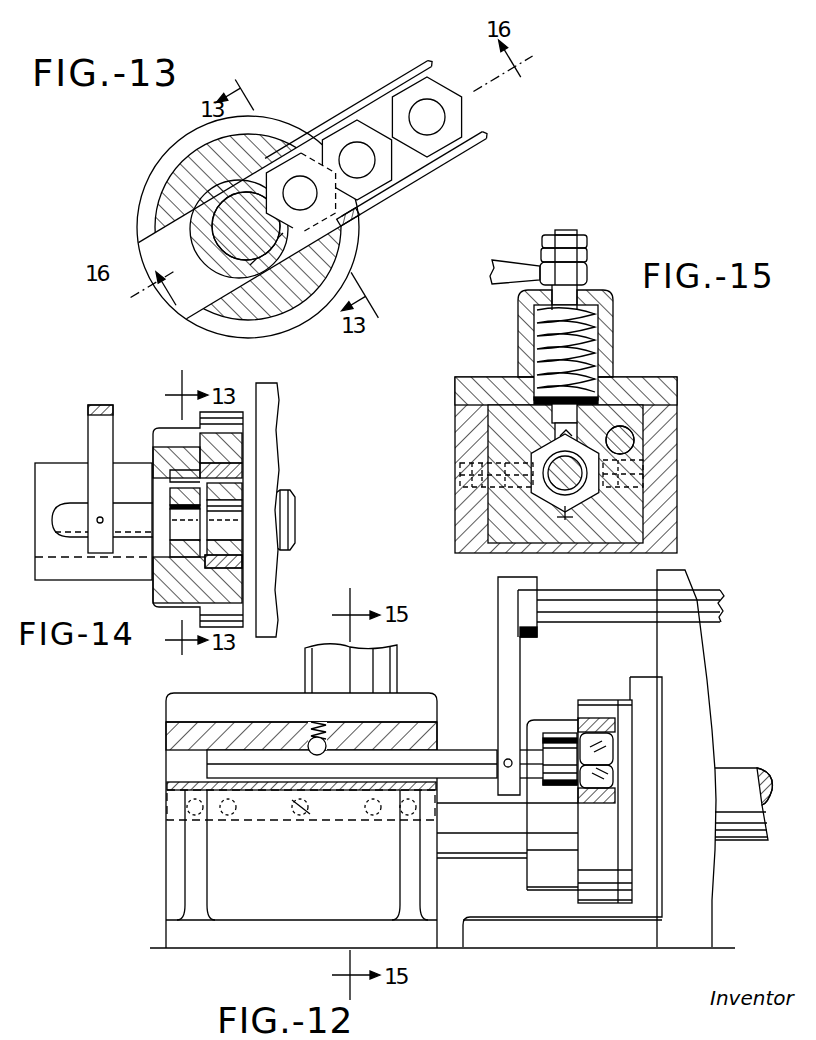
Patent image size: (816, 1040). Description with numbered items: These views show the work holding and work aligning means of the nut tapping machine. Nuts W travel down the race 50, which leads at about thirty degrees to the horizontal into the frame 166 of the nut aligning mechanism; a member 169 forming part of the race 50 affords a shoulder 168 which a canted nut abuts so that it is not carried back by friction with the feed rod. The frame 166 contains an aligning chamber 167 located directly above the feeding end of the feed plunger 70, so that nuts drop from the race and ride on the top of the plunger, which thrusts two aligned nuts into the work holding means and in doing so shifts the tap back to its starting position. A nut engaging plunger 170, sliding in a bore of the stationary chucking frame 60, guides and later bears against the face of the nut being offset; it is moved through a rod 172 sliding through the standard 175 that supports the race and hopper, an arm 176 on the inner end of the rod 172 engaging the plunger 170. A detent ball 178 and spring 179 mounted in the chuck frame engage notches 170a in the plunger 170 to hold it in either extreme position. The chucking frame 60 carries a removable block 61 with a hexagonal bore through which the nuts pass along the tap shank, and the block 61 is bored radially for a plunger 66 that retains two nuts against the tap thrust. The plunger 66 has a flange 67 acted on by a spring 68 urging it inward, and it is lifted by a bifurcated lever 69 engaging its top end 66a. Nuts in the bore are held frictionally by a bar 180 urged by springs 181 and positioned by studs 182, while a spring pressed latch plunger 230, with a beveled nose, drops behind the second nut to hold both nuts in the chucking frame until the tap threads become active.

In FIG. 13, the race 50 is at (362, 102).
In FIG. 13, the work W is at (440, 113).
In FIG. 13, the feed plunger 70 is at (213, 234).
In FIG. 14, the feed plunger 70 is at (284, 498).
In FIG. 12, the feed plunger 70 is at (742, 778).
In FIG. 13, the frame 166 is at (292, 315).
In FIG. 12, the frame 166 is at (545, 875).
In FIG. 13, the shoulder 168 is at (332, 229).
In FIG. 14, the shoulder 168 is at (205, 560).
In FIG. 13, the member 169 is at (377, 201).
In FIG. 14, the member 169 is at (228, 566).
In FIG. 14, the arm 176 is at (93, 435).
In FIG. 12, the arm 176 is at (508, 660).
In FIG. 15, the plunger 170 is at (603, 450).
In FIG. 14, the plunger 170 is at (135, 507).
In FIG. 12, the plunger 170 is at (465, 763).
In FIG. 14, the aligning chamber 167 is at (181, 478).
In FIG. 12, the aligning chamber 167 is at (553, 737).
In FIG. 12, the rod 172 is at (626, 600).
In FIG. 14, the standard 175 is at (267, 510).
In FIG. 12, the standard 175 is at (700, 668).
In FIG. 15, the chucking frame 60 is at (455, 428).
In FIG. 12, the chucking frame 60 is at (435, 733).
In FIG. 15, the block 61 is at (507, 443).
In FIG. 15, the plunger 66 is at (603, 398).
In FIG. 15, the top end 66a is at (575, 232).
In FIG. 15, the flange 67 is at (572, 410).
In FIG. 15, the spring 68 is at (590, 330).
In FIG. 15, the lever 69 is at (512, 267).
In FIG. 15, the notches 170a is at (577, 430).
In FIG. 12, the notches 170a is at (325, 751).
In FIG. 12, the ball 178 is at (309, 740).
In FIG. 12, the spring 179 is at (315, 722).
In FIG. 15, the bar 180 is at (636, 448).
In FIG. 12, the bar 180 is at (294, 818).
In FIG. 12, the springs 181 is at (306, 814).
In FIG. 15, the studs 182 is at (643, 477).
In FIG. 12, the studs 182 is at (230, 818).
In FIG. 15, the spring pressed plunger 230 is at (533, 478).